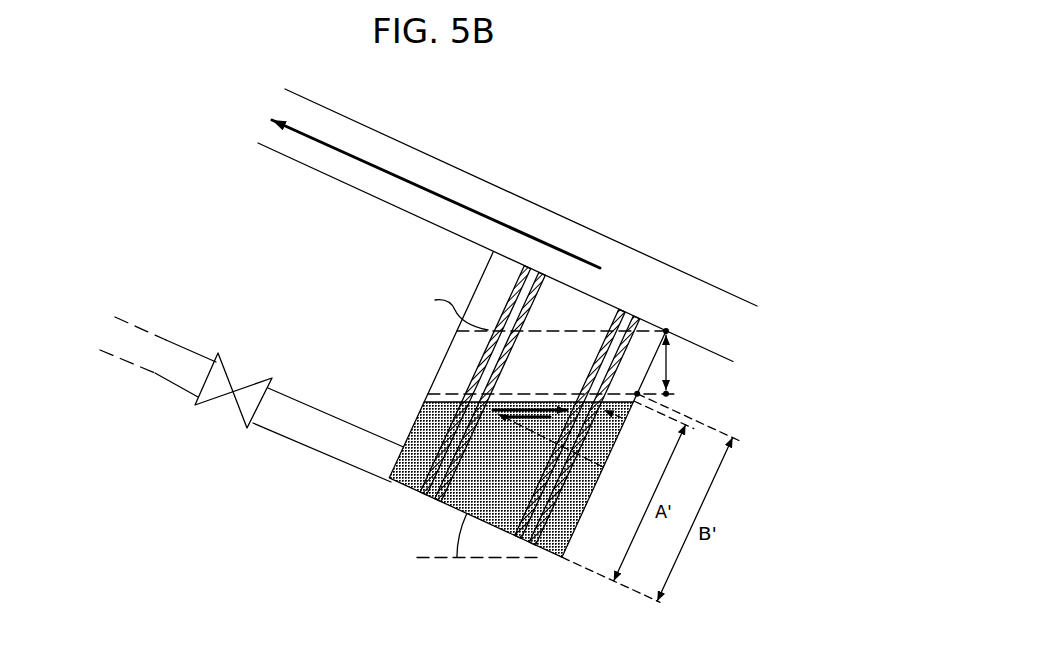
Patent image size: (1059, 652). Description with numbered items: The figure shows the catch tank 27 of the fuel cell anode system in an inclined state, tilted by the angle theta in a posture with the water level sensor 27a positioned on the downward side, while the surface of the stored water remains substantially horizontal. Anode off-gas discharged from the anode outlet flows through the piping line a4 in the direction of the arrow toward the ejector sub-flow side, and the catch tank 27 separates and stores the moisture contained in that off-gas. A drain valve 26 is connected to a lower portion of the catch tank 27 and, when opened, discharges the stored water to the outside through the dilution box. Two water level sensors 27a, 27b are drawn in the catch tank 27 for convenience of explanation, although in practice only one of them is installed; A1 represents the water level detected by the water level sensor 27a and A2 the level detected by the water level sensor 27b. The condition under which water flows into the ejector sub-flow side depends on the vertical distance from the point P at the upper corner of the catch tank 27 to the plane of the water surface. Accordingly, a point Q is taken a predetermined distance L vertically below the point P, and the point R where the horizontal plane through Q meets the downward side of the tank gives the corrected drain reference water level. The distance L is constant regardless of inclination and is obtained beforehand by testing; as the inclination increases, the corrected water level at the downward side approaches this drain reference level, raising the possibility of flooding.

The piping line a4 is at (453, 167).
The catch tank 27 is at (433, 382).
The water level sensor 27a is at (527, 540).
The water level sensor 27b is at (428, 496).
The drain valve 26 is at (214, 402).
The point at upper corner of catch tank P is at (672, 320).
The point spaced downward from point P Q is at (671, 397).
The point representing drain reference water level R is at (636, 392).
The predetermined distance L is at (674, 362).
The water level detected by water level sensor 27a A1 is at (626, 423).
The water level detected by water level sensor 27b A2 is at (564, 448).